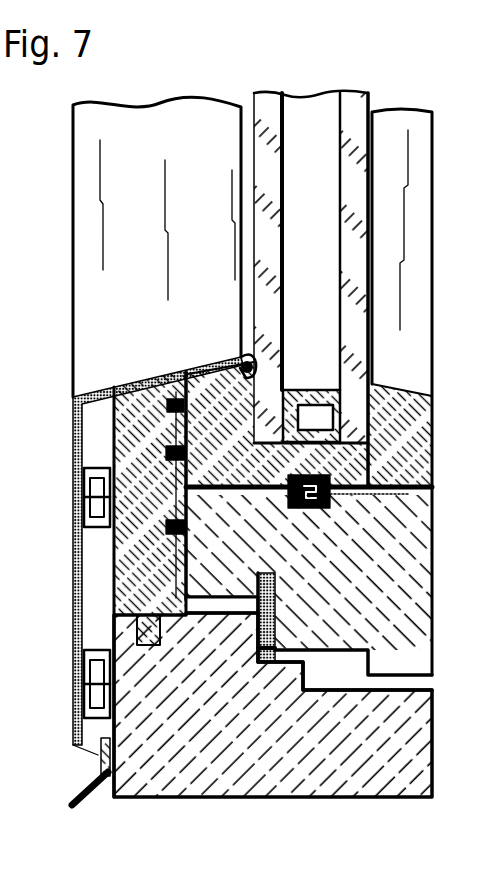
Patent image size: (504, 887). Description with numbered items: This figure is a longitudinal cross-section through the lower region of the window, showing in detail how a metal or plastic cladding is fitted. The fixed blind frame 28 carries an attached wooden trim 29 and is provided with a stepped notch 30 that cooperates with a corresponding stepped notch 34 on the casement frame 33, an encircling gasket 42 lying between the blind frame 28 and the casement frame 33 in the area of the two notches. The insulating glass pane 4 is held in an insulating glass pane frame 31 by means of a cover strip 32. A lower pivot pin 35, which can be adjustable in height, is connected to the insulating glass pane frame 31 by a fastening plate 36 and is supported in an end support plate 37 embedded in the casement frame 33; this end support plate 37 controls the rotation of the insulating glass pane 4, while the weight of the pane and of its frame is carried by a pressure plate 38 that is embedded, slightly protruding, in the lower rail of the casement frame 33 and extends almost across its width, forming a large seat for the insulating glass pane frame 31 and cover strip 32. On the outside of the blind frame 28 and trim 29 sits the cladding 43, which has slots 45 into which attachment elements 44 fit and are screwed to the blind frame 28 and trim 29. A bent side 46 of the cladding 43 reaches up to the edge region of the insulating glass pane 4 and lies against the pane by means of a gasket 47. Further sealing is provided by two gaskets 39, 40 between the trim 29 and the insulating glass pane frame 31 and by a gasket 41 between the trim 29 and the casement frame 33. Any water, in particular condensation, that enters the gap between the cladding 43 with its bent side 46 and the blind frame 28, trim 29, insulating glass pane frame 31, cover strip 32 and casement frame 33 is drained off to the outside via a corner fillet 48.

The insulating glass pane 4 is at (358, 231).
The blind frame 28 is at (206, 734).
The wooden trim 29 is at (78, 397).
The stepped notch 30 is at (300, 661).
The insulating glass pane frame 31 is at (228, 415).
The cover strip 32 is at (392, 418).
The casement frame 33 is at (396, 607).
The stepped notch 34 is at (187, 601).
The pivot pin 35 is at (333, 509).
The fastening plate 36 is at (335, 446).
The end support plate 37 is at (370, 551).
The pressure plate 38 is at (394, 482).
The gasket 39 is at (170, 447).
The gasket 40 is at (180, 372).
The gasket 41 is at (170, 527).
The encircling gasket 42 is at (260, 625).
The cladding 43 is at (82, 560).
The attachment element 44 is at (84, 498).
The slot 45 is at (86, 468).
The bent side 46 is at (132, 378).
The gasket 47 is at (241, 356).
The corner fillet 48 is at (93, 796).